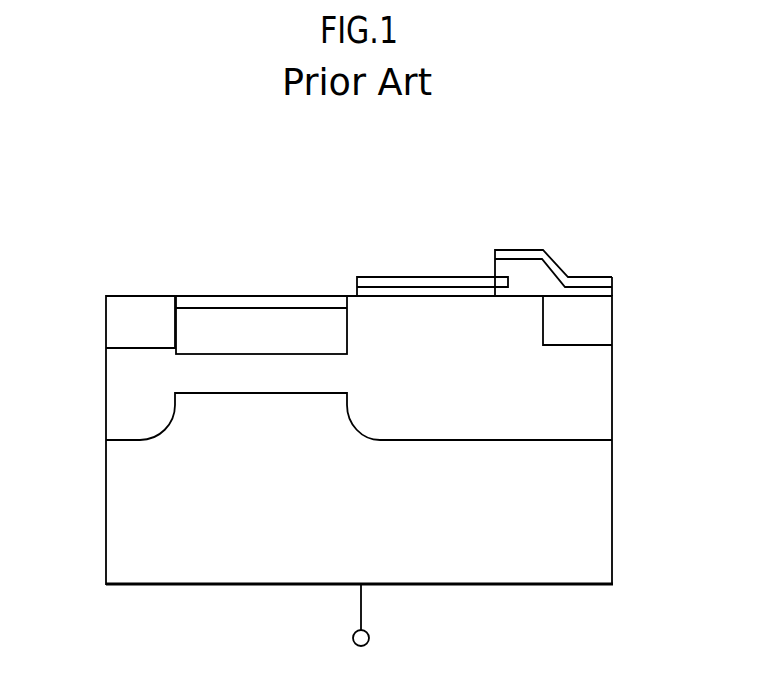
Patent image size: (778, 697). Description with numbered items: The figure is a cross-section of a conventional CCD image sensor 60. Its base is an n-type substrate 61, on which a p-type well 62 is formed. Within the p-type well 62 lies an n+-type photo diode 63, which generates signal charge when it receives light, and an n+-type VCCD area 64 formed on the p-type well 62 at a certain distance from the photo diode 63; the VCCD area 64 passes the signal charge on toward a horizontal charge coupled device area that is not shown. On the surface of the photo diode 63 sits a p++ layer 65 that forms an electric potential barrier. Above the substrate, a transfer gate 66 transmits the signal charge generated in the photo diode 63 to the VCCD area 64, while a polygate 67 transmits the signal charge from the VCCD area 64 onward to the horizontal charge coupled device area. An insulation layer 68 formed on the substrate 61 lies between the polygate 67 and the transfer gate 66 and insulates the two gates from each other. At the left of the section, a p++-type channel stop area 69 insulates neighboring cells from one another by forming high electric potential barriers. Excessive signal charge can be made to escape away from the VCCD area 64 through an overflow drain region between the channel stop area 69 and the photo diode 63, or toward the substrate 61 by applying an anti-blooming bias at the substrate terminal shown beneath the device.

The CCD image sensor 60 is at (113, 217).
The n-type substrate 61 is at (603, 522).
The p-type well 62 is at (113, 398).
The n+-type photo diode 63 is at (307, 342).
The n+-type VCCD area 64 is at (602, 325).
The p++ layer 65 is at (250, 302).
The transfer gate 66 is at (432, 283).
The polygate 67 is at (556, 264).
The insulation layer 68 is at (602, 290).
The p++-type channel stop area 69 is at (140, 303).